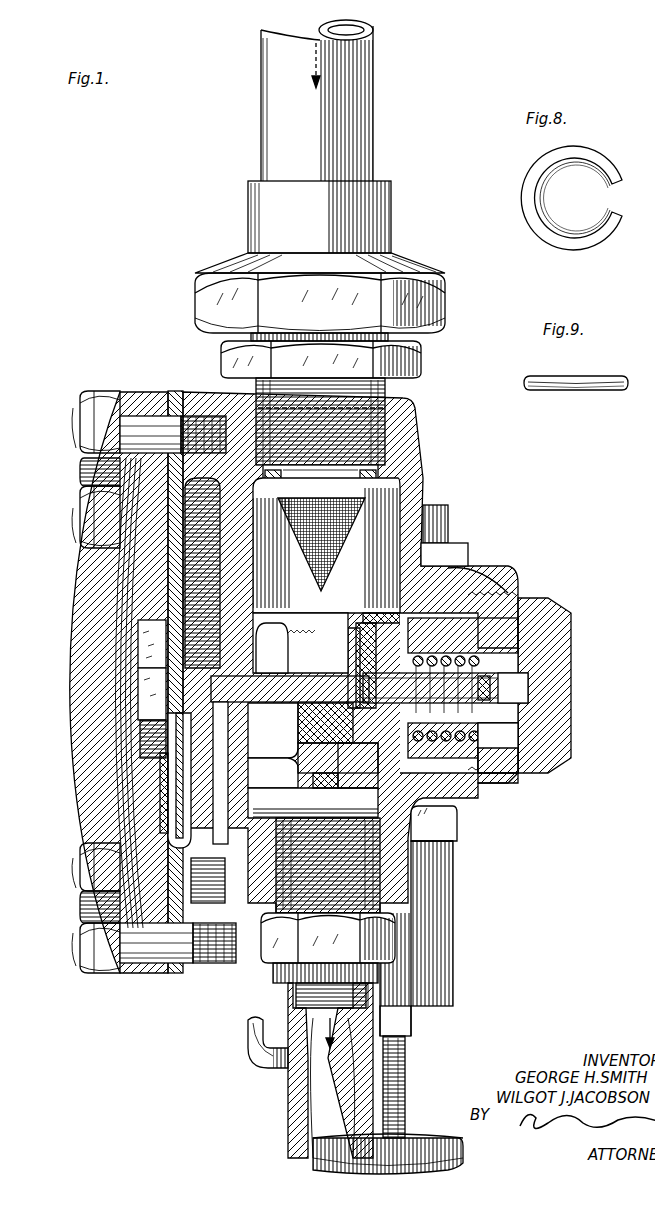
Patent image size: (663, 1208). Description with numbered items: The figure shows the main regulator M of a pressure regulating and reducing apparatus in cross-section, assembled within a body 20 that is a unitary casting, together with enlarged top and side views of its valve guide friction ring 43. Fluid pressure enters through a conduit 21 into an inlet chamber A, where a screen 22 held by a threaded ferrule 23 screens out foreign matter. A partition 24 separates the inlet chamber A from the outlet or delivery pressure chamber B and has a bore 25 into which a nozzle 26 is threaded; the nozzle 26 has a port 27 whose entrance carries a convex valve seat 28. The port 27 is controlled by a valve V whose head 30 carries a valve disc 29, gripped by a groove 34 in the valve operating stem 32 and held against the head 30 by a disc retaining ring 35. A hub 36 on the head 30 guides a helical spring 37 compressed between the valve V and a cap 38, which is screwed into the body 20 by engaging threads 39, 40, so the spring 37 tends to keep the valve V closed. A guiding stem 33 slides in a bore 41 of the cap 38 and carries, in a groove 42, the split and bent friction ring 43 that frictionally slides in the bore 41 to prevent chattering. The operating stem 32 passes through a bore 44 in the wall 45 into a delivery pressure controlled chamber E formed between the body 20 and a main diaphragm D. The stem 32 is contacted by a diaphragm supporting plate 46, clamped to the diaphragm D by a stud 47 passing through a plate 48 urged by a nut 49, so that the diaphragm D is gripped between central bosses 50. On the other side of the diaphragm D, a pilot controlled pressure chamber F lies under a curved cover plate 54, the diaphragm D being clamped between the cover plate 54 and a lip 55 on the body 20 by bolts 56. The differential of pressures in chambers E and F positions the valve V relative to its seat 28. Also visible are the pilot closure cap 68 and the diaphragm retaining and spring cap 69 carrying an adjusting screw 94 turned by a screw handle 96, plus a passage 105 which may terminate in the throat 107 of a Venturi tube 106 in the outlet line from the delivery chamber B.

In FIG. 1, the body 20 is at (495, 793).
In FIG. 1, the conduit 21 is at (253, 140).
In FIG. 1, the screen 22 is at (340, 548).
In FIG. 1, the threaded ferrule 23 is at (372, 486).
In FIG. 1, the partition 24 is at (314, 850).
In FIG. 1, the bore 25 is at (285, 782).
In FIG. 1, the nozzle 26 is at (332, 735).
In FIG. 1, the port 27 is at (290, 660).
In FIG. 1, the convex valve seat 28 is at (347, 640).
In FIG. 1, the valve disc 29 is at (368, 640).
In FIG. 1, the head 30 is at (378, 740).
In FIG. 1, the valve operating stem 32 is at (273, 730).
In FIG. 1, the guiding stem 33 is at (482, 682).
In FIG. 1, the groove 34 is at (378, 610).
In FIG. 1, the disc retaining ring 35 is at (455, 562).
In FIG. 1, the hub 36 is at (495, 752).
In FIG. 1, the helical spring 37 is at (488, 570).
In FIG. 1, the cap 38 is at (555, 598).
In FIG. 1, the threads 39 is at (520, 768).
In FIG. 1, the threads 40 is at (470, 785).
In FIG. 1, the bore 41 is at (520, 668).
In FIG. 1, the groove 42 is at (505, 656).
In FIG. 1, the friction ring 43 is at (480, 690).
In FIG. 8, the friction ring 43 is at (566, 232).
In FIG. 9, the friction ring 43 is at (560, 382).
In FIG. 1, the bore 44 is at (290, 715).
In FIG. 1, the wall 45 is at (290, 770).
In FIG. 1, the diaphragm supporting plate 46 is at (195, 800).
In FIG. 1, the stud 47 is at (160, 673).
In FIG. 1, the plate 48 is at (170, 762).
In FIG. 1, the nut 49 is at (140, 700).
In FIG. 1, the central bosses 50 is at (178, 640).
In FIG. 1, the curved cover plate 54 is at (88, 563).
In FIG. 1, the lip 55 is at (185, 395).
In FIG. 1, the bolts 56 is at (140, 395).
In FIG. 1, the closure cap 68 is at (442, 500).
In FIG. 1, the diaphragm retaining and spring cap 69 is at (433, 930).
In FIG. 1, the adjusting screw 94 is at (398, 1058).
In FIG. 1, the screw handle 96 is at (415, 1125).
In FIG. 1, the passage 105 is at (240, 1048).
In FIG. 1, the Venturi tube 106 is at (285, 1118).
In FIG. 1, the throat 107 is at (315, 1085).
In FIG. 1, the inlet chamber A is at (418, 530).
In FIG. 1, the outlet or delivery pressure chamber B is at (445, 840).
In FIG. 1, the main diaphragm D is at (185, 858).
In FIG. 1, the outlet or delivery pressure controlled chamber E is at (205, 968).
In FIG. 1, the pilot controlled pressure chamber F is at (125, 590).
In FIG. 1, the main regulator M is at (548, 572).
In FIG. 1, the valve V is at (490, 742).